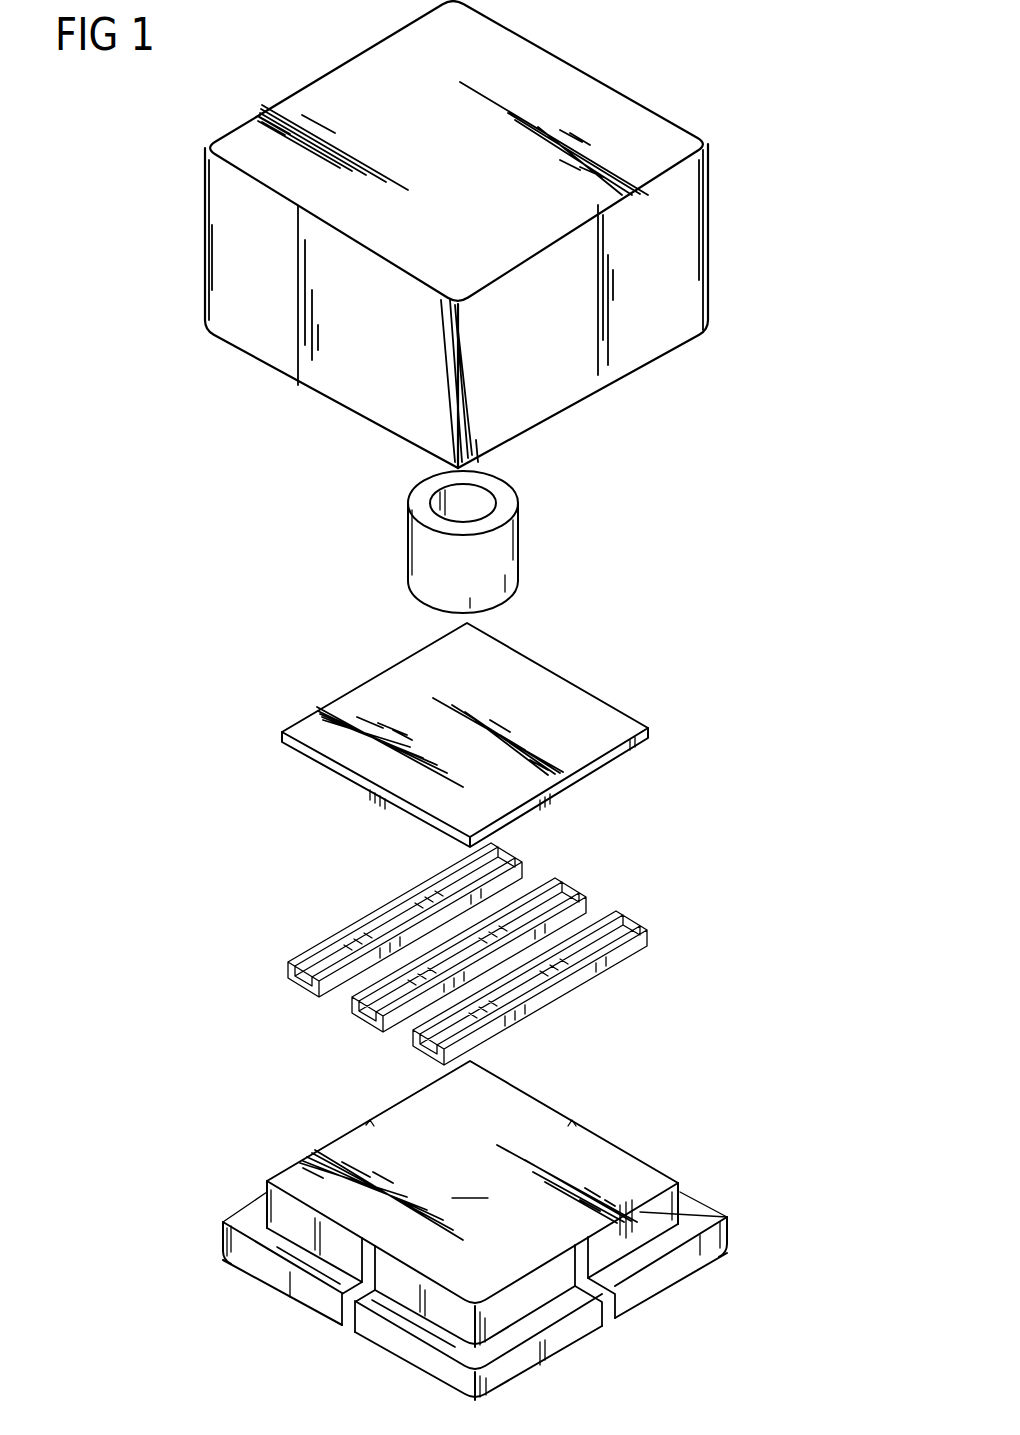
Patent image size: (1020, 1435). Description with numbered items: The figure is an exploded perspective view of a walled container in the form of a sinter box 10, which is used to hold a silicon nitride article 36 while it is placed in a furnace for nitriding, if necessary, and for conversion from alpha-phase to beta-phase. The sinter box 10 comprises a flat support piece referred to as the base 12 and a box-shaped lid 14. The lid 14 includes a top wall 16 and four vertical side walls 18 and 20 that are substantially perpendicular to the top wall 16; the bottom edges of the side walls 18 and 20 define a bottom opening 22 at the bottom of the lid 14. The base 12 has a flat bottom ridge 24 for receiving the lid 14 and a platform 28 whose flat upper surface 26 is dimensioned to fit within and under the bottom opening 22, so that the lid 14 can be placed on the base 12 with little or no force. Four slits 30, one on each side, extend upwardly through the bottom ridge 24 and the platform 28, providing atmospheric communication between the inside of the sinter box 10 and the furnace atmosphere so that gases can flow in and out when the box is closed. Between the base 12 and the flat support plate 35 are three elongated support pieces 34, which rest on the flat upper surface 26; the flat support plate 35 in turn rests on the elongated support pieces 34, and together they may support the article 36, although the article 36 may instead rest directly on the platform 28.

The sinter box 10 is at (158, 98).
The base 12 is at (534, 1230).
The box-shaped lid 14 is at (521, 234).
The top wall 16 is at (631, 118).
The side walls 18 is at (693, 213).
The side walls 20 is at (330, 385).
The bottom opening 22 is at (585, 406).
The bottom ridge 24 is at (533, 1370).
The flat upper surface 26 is at (472, 1204).
The platform 28 is at (693, 1200).
The slits 30 is at (370, 1122).
The elongated support pieces 34 is at (628, 922).
The flat support plate 35 is at (620, 710).
The silicon nitride article 36 is at (510, 590).